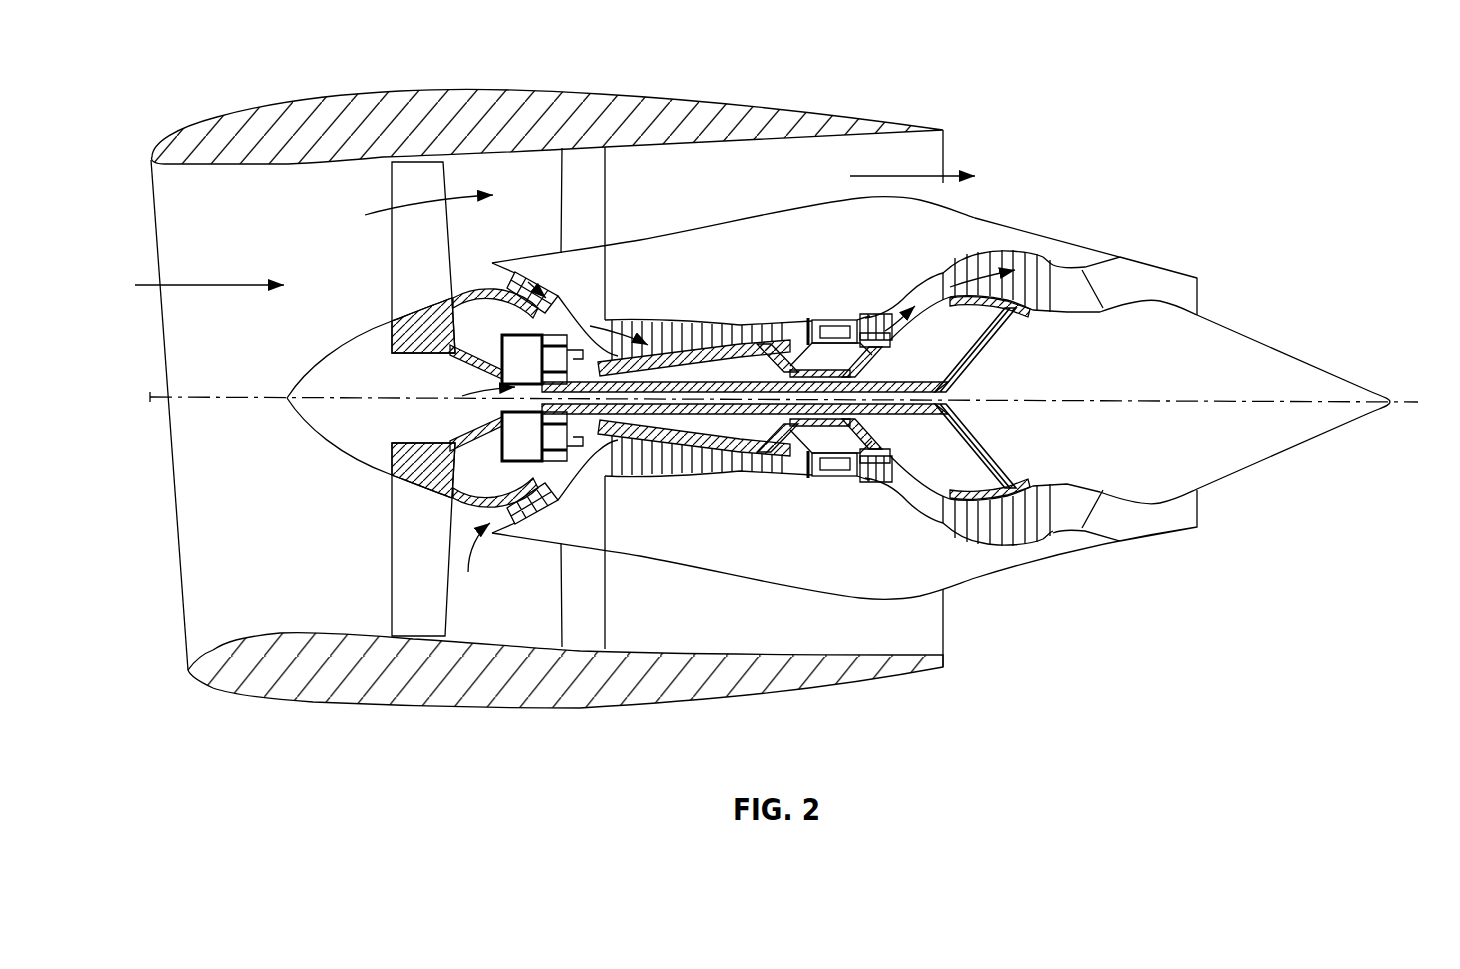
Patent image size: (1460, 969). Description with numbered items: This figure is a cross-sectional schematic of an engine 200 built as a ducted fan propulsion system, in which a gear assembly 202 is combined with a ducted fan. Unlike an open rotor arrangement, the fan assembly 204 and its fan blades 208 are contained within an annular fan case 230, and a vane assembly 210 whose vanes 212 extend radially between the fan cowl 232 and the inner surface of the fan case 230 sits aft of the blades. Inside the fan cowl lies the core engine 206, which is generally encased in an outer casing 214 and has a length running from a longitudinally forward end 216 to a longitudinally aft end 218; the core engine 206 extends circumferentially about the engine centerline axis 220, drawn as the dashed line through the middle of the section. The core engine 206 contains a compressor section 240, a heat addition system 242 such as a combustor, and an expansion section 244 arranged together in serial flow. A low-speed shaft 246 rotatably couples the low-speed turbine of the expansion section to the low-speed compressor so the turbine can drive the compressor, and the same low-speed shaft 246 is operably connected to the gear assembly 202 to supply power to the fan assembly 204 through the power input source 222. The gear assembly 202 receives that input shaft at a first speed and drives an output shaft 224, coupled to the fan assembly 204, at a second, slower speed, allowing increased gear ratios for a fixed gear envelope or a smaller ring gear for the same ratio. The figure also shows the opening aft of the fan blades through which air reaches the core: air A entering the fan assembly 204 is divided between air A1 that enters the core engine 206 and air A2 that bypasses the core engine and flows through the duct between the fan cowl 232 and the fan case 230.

The engine 200 is at (1014, 60).
The gear assembly 202 is at (393, 466).
The fan assembly 204 is at (280, 221).
The core engine 206 is at (941, 239).
The fan blades 208 is at (392, 175).
The vane assembly 210 is at (632, 188).
The vanes 212 is at (560, 196).
The outer casing 214 is at (1073, 254).
The longitudinally forward end 216 is at (278, 395).
The longitudinally aft end 218 is at (1408, 401).
The engine centerline axis 220 is at (148, 398).
The power input source 222 is at (491, 534).
The output shaft 224 is at (480, 344).
The annular fan case 230 is at (552, 88).
The fan cowl 232 is at (693, 230).
The compressor section 240 is at (670, 483).
The heat addition system 242 is at (824, 490).
The expansion section 244 is at (986, 558).
The low-speed shaft 246 is at (985, 350).
The air entering the fan assembly A is at (208, 287).
The air that enters the core engine A1 is at (490, 276).
The air that bypasses the core engine A2 is at (423, 190).